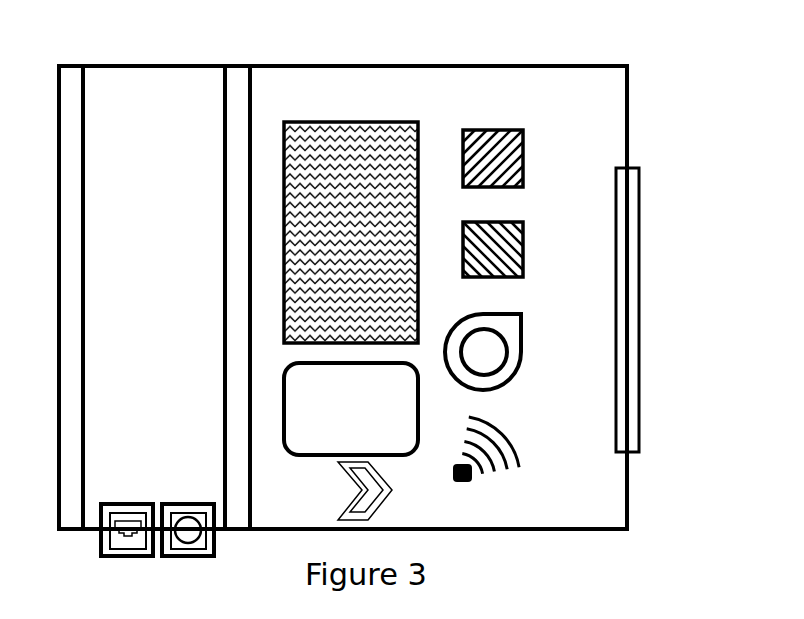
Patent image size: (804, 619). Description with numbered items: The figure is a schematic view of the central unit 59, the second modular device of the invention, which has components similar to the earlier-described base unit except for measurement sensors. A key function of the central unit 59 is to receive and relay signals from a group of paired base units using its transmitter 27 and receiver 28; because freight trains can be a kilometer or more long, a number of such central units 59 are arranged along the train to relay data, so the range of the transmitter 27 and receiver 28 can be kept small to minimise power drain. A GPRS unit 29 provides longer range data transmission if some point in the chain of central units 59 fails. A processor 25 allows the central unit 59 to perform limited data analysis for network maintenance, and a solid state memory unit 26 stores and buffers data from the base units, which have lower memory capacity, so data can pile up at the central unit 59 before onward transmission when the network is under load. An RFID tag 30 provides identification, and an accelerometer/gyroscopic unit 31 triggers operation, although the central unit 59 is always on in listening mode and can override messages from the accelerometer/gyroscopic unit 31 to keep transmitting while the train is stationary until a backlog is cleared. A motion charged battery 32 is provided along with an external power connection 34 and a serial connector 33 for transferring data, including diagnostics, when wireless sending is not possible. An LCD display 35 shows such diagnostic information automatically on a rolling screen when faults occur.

The central unit 59 is at (646, 71).
The motion charged battery 32 is at (175, 306).
The serial connector 33 is at (128, 521).
The external power connection 34 is at (186, 528).
The processor 25 is at (361, 152).
The solid state memory unit 26 is at (365, 421).
The transmitter 27 is at (507, 170).
The receiver 28 is at (507, 258).
The GPRS unit 29 is at (480, 357).
The RFID tag 30 is at (472, 477).
The accelerometer/gyroscopic unit 31 is at (352, 477).
The LCD display 35 is at (628, 290).